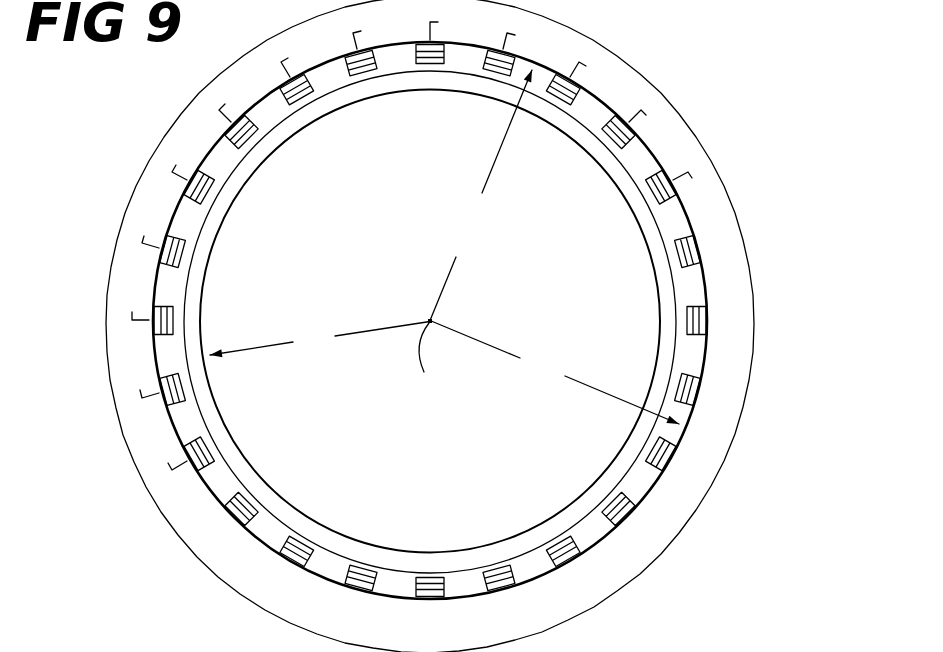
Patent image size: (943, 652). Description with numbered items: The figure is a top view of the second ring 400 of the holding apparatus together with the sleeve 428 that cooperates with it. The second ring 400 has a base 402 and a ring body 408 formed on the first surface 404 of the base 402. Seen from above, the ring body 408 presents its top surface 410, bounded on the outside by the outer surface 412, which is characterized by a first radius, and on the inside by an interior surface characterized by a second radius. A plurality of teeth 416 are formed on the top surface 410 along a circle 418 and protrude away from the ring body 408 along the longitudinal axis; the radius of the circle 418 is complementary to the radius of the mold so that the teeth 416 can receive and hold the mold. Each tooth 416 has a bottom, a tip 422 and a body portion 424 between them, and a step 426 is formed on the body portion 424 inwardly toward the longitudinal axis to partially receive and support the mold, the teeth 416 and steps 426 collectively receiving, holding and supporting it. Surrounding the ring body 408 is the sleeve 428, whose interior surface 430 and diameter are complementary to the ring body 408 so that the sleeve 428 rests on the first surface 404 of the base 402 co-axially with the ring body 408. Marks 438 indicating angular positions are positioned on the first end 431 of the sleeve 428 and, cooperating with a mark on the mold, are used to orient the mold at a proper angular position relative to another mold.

The second ring 400 is at (740, 55).
The base 402 is at (638, 481).
The first surface 404 is at (512, 481).
The ring body 408 is at (578, 507).
The top surface 410 is at (218, 164).
The outer surface 412 is at (683, 433).
The teeth 416 is at (168, 325).
The circle 418 is at (470, 47).
The tip 422 is at (212, 455).
The body portion 424 is at (257, 527).
The step 426 is at (423, 577).
The sleeve 428 is at (711, 152).
The interior surface 430 is at (693, 364).
The first end 431 is at (738, 268).
The marks 438 is at (176, 152).